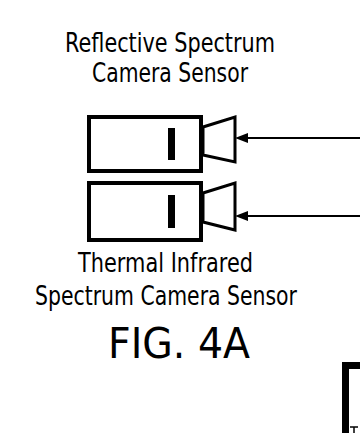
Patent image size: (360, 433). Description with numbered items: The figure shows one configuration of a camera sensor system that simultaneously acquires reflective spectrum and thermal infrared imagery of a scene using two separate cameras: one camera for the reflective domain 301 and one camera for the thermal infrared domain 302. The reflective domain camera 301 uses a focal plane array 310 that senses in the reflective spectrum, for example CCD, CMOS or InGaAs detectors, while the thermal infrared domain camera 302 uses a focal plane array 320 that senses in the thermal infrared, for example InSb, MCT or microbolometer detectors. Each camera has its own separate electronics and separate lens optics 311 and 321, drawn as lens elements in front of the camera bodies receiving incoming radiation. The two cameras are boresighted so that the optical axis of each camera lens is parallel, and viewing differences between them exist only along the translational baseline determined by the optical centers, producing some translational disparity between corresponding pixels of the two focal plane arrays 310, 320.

The reflective domain camera 301 is at (114, 143).
The thermal infrared domain camera 302 is at (114, 211).
The focal plane array 310 is at (140, 144).
The focal plane array 320 is at (140, 211).
The lens optics 311 is at (281, 124).
The lens optics 321 is at (281, 221).